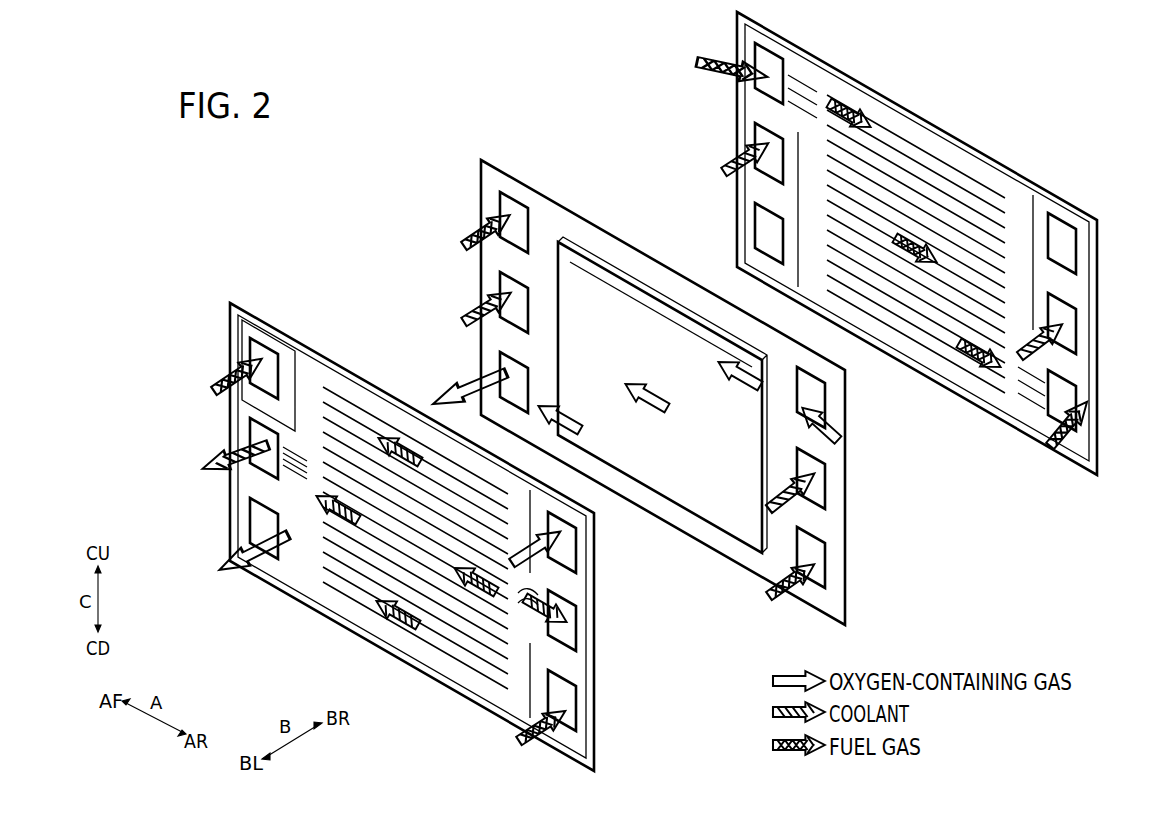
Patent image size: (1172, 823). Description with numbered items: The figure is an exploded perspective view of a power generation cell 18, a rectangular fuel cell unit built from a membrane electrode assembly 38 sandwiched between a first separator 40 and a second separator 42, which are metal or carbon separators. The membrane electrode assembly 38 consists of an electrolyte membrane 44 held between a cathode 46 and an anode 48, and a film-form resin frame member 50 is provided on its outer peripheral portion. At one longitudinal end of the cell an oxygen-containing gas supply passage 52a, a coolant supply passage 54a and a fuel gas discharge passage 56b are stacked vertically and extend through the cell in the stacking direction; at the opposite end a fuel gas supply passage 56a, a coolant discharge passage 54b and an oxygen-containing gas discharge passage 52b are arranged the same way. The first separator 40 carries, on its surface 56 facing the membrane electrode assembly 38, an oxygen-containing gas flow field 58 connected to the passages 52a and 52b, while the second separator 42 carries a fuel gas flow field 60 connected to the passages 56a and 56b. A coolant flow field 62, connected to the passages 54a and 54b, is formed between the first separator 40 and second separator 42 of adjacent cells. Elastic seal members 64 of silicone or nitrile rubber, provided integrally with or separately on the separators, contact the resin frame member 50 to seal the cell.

The power generation cell 18 is at (333, 196).
The membrane electrode assembly 38 is at (662, 351).
The first separator 40 is at (228, 307).
The second separator 42 is at (737, 19).
The electrolyte membrane 44 is at (660, 323).
The cathode 46 is at (601, 284).
The anode 48 is at (631, 275).
The resin frame member 50 is at (565, 222).
The oxygen-containing gas supply passage 52a is at (568, 559).
The oxygen-containing gas discharge passage 52b is at (262, 520).
The coolant supply passage 54a is at (567, 617).
The coolant discharge passage 54b is at (262, 440).
The surface of first bipolar plate 56 is at (312, 361).
The fuel gas supply passage 56a is at (262, 360).
The fuel gas discharge passage 56b is at (567, 702).
The oxygen-containing gas flow field 58 is at (434, 608).
The fuel gas flow field 60 is at (947, 330).
The coolant flow field 62 is at (348, 577).
The elastic seal member 64 is at (943, 140).